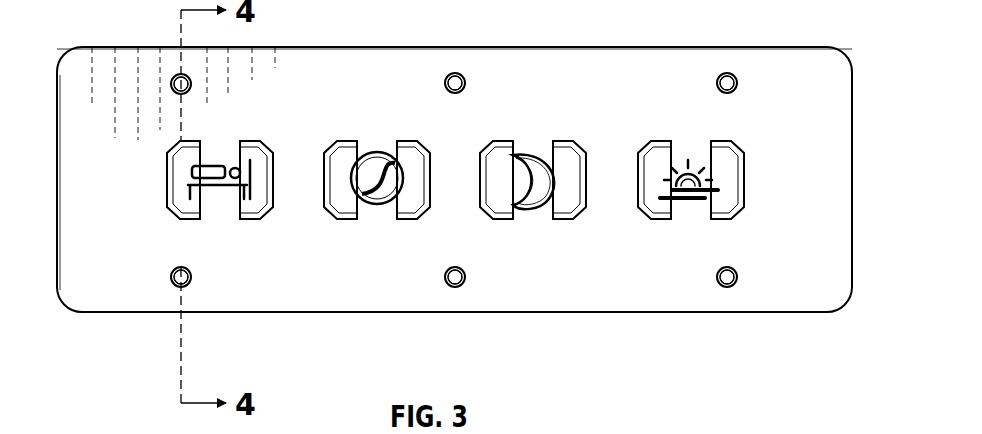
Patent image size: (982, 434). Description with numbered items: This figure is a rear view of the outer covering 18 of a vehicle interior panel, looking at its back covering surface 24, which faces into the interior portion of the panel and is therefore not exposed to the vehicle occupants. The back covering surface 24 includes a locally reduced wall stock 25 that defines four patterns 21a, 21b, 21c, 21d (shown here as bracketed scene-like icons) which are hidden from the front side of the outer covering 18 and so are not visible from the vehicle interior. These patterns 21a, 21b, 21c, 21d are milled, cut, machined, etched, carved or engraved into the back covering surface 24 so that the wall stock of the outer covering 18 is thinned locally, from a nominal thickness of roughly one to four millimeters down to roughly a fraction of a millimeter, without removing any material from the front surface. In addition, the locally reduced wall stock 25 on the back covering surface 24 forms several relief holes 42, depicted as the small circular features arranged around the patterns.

The outer covering 18 is at (100, 305).
The back covering surface 24 is at (158, 305).
The pattern 21a is at (673, 232).
The pattern 21b is at (530, 232).
The pattern 21c is at (373, 230).
The pattern 21d is at (197, 232).
The locally reduced wall stock 25 is at (191, 88).
The relief hole 42 is at (171, 88).